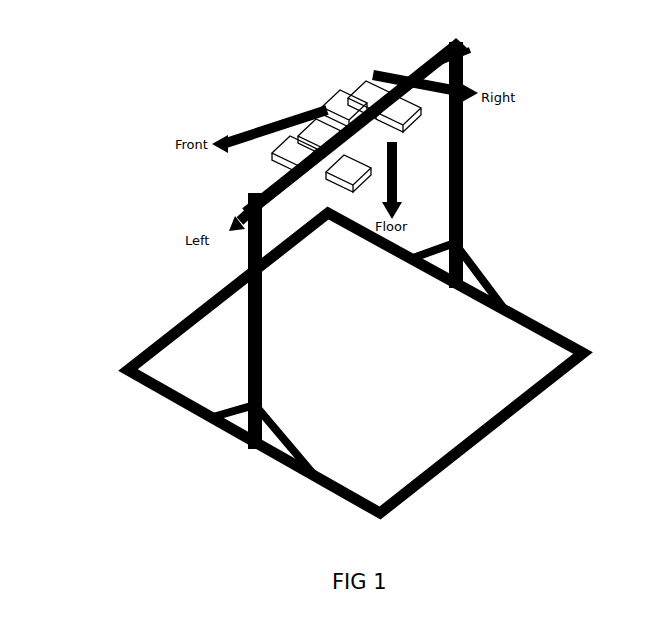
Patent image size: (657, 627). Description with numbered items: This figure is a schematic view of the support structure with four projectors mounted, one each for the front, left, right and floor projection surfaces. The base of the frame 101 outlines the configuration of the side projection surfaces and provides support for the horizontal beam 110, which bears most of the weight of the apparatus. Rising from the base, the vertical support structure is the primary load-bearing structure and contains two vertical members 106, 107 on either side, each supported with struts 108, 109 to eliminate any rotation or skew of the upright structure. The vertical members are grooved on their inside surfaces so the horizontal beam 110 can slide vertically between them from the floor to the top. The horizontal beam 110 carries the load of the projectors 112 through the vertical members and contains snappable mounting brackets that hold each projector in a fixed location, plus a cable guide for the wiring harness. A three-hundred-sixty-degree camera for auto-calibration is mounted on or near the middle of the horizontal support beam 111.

The base of the frame 101 is at (527, 310).
The vertical member 106 is at (466, 187).
The vertical member 107 is at (247, 307).
The strut 108 is at (220, 401).
The strut 109 is at (490, 267).
The horizontal beam 110 is at (462, 74).
The horizontal support beam 111 is at (293, 118).
The projectors 112 is at (364, 84).